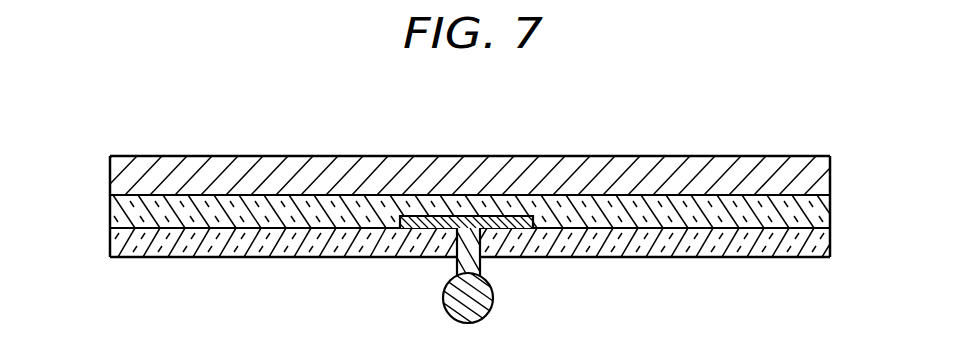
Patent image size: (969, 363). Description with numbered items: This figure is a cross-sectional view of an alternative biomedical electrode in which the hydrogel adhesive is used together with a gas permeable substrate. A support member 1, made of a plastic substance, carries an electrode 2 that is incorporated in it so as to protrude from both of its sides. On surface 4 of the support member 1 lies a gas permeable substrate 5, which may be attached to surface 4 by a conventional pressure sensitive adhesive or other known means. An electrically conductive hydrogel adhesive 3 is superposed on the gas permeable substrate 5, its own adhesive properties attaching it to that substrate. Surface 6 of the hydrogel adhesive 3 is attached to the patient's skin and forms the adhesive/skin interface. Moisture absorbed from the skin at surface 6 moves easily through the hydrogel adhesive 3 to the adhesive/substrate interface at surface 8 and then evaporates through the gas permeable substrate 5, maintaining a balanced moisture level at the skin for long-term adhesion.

The support member 1 is at (681, 256).
The electrode 2 is at (457, 323).
The hydrogel adhesive 3 is at (782, 165).
The surface 4 is at (810, 225).
The gas permeable substrate 5 is at (110, 213).
The surface 6 is at (202, 155).
The surface 8 is at (641, 192).